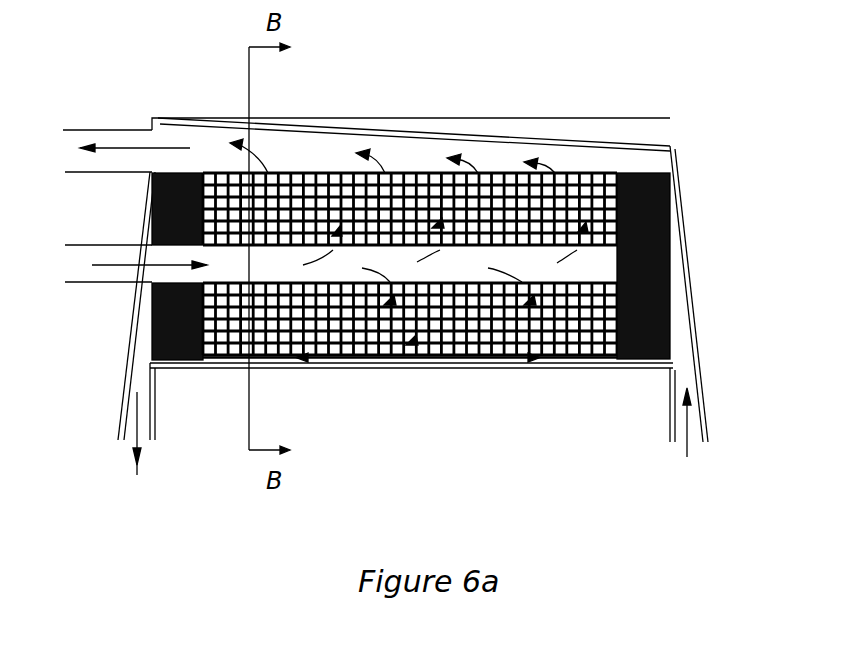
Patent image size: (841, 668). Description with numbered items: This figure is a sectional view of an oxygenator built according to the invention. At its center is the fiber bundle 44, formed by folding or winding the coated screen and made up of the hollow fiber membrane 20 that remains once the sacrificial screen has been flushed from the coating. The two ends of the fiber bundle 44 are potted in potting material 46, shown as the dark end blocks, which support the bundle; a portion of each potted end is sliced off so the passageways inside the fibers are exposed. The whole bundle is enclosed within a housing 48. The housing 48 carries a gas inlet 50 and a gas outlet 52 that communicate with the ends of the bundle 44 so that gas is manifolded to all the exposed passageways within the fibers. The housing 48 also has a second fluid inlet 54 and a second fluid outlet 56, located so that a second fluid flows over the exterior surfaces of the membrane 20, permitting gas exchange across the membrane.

The hollow fiber membrane 20 is at (320, 173).
The fiber bundle 44 is at (440, 355).
The potting material 46 is at (653, 175).
The housing 48 is at (388, 137).
The gas inlet 50 is at (670, 400).
The gas outlet 52 is at (152, 398).
The second fluid inlet 54 is at (110, 288).
The second fluid outlet 56 is at (110, 127).